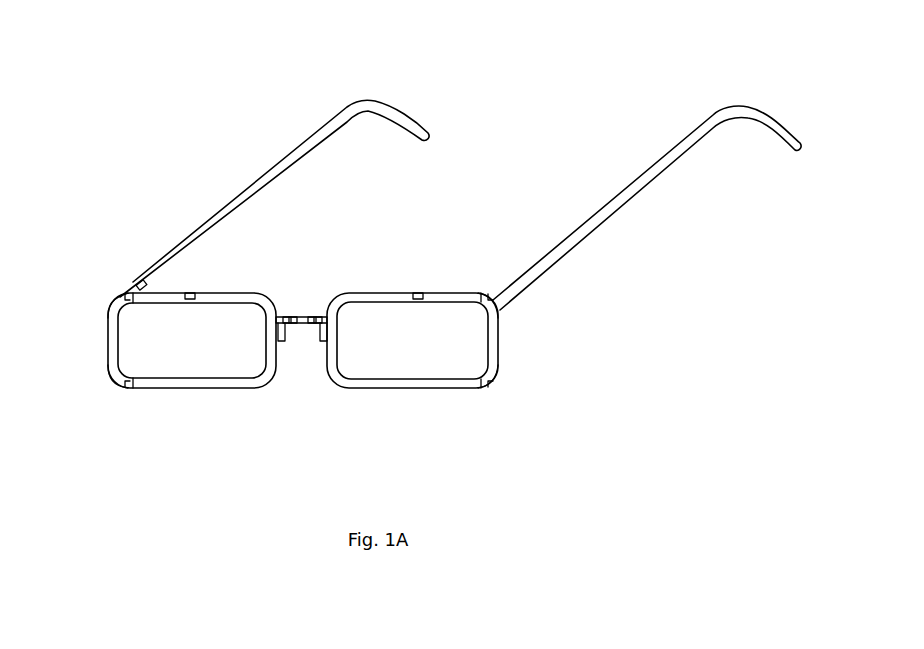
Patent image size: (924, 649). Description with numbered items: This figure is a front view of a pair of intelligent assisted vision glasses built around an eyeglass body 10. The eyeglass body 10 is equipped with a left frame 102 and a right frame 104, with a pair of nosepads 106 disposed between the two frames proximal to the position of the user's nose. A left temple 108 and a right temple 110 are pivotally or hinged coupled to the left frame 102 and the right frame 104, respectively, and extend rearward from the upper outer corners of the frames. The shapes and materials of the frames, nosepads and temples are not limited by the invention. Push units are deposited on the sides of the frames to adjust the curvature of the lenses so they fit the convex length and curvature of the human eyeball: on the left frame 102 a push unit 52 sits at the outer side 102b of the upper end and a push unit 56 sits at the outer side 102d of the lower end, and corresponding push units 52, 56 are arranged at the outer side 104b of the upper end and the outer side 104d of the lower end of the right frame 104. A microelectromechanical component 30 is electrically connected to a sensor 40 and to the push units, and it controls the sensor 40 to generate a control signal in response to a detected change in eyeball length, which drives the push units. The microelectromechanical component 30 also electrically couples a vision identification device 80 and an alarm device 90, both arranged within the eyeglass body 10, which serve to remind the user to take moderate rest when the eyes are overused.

The eyeglass body 10 is at (545, 78).
The microelectromechanical component 30 is at (138, 280).
The sensor 40 is at (413, 298).
The push unit 52 is at (128, 297).
The push unit 56 is at (125, 387).
The vision identification device 80 is at (291, 316).
The alarm device 90 is at (318, 316).
The left frame 102 is at (500, 348).
The outer side of the upper end of the left frame 102b is at (493, 313).
The outer side of the lower end of the left frame 102d is at (497, 377).
The right frame 104 is at (108, 343).
The outer side of the upper end of the right frame 104b is at (110, 307).
The outer side of the lower end of the right frame 104d is at (110, 372).
The pair of nosepads 106 is at (320, 329).
The left temple 108 is at (632, 195).
The right temple 110 is at (282, 168).